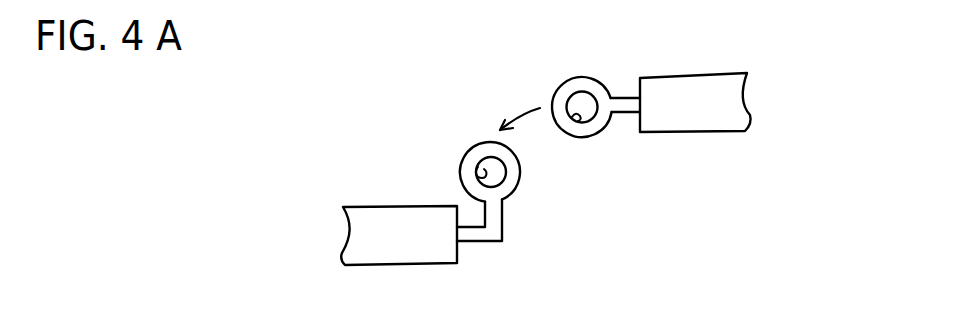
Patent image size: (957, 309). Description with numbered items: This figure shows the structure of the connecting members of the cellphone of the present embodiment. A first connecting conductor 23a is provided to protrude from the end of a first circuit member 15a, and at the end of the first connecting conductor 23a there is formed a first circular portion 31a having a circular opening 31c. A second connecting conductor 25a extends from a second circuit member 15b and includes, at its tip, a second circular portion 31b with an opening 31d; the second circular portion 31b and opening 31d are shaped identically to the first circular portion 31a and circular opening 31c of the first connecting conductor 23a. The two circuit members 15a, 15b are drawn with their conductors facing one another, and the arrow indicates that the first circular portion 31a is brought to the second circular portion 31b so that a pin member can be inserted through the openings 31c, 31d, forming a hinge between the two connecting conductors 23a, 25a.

The first circuit member 15a is at (710, 123).
The second circuit member 15b is at (357, 235).
The first connecting conductor 23a is at (628, 100).
The second connecting conductor 25a is at (497, 230).
The first circular portion 31a is at (598, 130).
The second circular portion 31b is at (478, 146).
The circular opening 31c is at (572, 117).
The opening 31d is at (480, 168).